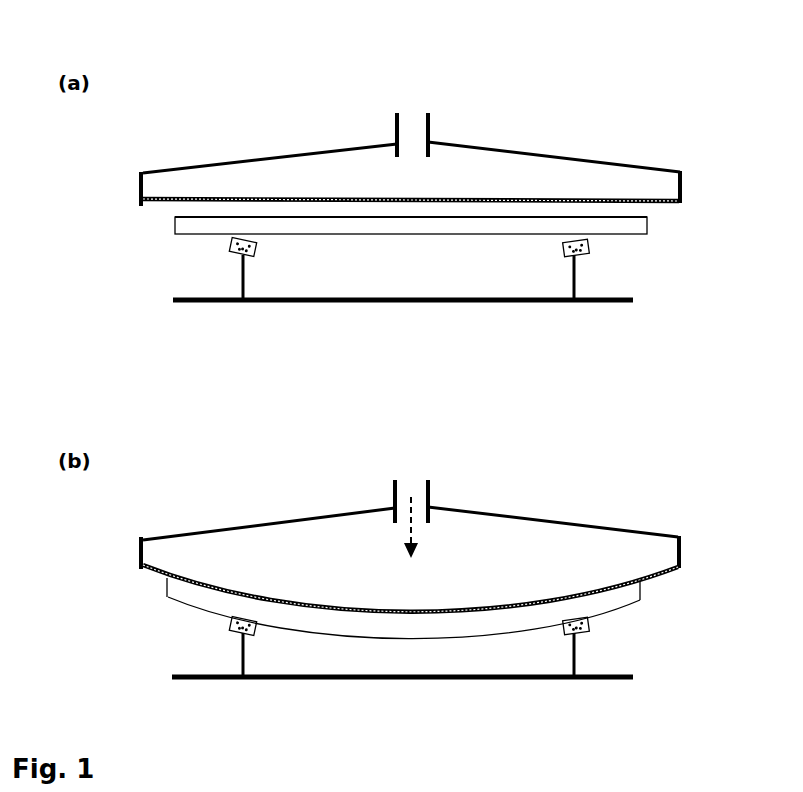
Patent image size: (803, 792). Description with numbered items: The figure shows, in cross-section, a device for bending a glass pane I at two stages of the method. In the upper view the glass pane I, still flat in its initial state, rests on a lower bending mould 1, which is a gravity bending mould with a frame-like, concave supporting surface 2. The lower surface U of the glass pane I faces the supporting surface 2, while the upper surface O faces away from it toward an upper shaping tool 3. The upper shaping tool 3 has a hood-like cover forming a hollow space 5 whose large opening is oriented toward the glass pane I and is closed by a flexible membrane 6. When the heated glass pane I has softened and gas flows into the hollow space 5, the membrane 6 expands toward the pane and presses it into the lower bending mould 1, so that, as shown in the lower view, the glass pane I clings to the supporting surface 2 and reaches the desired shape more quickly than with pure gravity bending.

The lower bending mould 1 is at (618, 302).
The supporting surface 2 is at (590, 243).
The upper shaping tool 3 is at (610, 162).
The hollow space 5 is at (337, 180).
The membrane 6 is at (533, 200).
The glass pane I is at (175, 226).
The upper surface of the glass pane O is at (181, 203).
The lower surface of the glass pane U is at (181, 239).